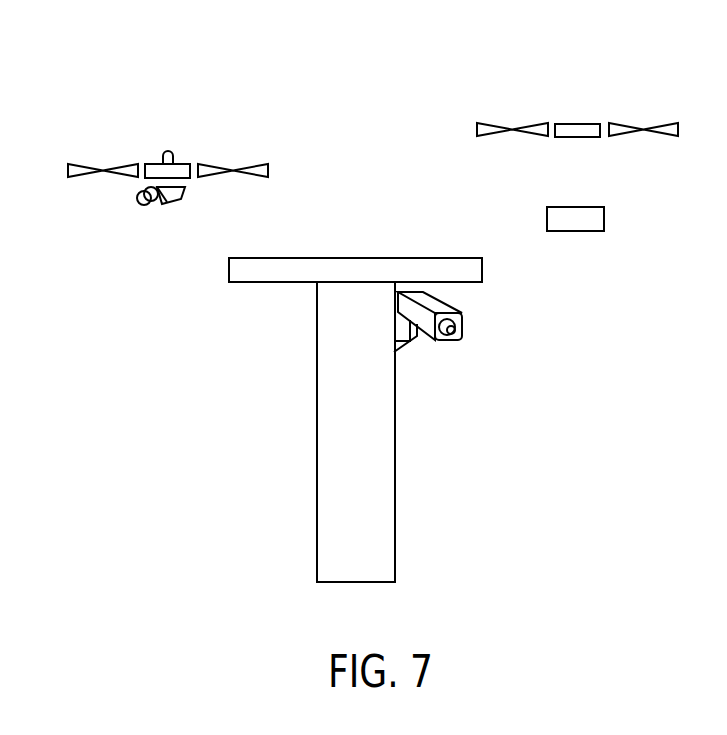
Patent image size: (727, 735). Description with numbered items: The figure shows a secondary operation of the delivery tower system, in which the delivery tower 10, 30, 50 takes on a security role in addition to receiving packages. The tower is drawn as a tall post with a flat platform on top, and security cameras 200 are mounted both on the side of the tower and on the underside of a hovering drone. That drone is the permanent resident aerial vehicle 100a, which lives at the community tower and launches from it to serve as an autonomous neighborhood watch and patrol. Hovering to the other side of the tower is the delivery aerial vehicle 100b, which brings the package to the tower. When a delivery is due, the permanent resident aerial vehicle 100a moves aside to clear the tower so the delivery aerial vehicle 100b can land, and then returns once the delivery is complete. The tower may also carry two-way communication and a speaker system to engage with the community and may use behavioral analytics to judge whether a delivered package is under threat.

The permanent resident aerial vehicle 100a is at (99, 79).
The delivery aerial vehicle 100b is at (564, 100).
The security camera 200 is at (140, 216).
The delivery tower 10 is at (349, 420).
The delivery tower 30 is at (349, 420).
The delivery tower 50 is at (295, 442).